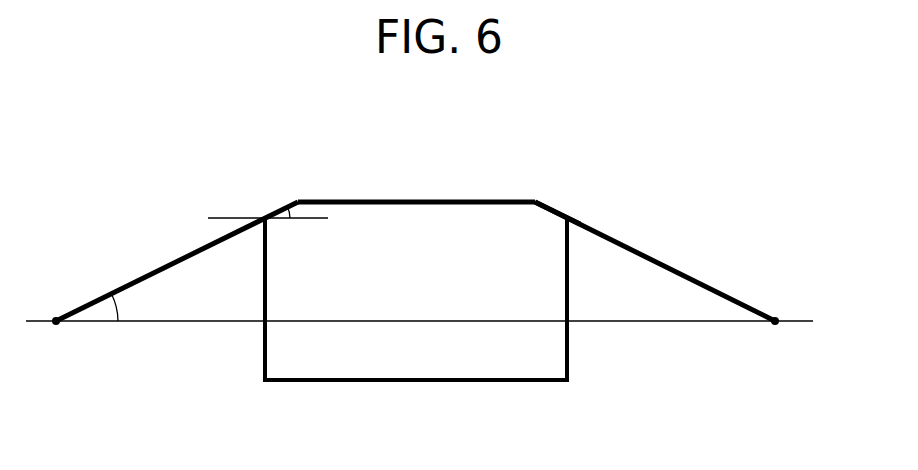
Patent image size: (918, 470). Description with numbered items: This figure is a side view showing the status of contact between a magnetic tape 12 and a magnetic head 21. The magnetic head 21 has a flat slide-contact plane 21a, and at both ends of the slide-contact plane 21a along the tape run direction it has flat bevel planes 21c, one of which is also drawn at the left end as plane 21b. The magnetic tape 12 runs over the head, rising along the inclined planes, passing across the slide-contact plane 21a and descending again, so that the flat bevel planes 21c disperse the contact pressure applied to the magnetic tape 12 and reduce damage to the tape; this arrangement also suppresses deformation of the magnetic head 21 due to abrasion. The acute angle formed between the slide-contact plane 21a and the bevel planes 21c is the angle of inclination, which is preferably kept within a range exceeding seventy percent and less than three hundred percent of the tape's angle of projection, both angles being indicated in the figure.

The magnetic tape 12 is at (678, 272).
The magnetic head 21 is at (417, 366).
The slide-contact plane 21a is at (410, 201).
The left inclined surface of prism 21b is at (279, 210).
The bevel planes 21c is at (553, 210).